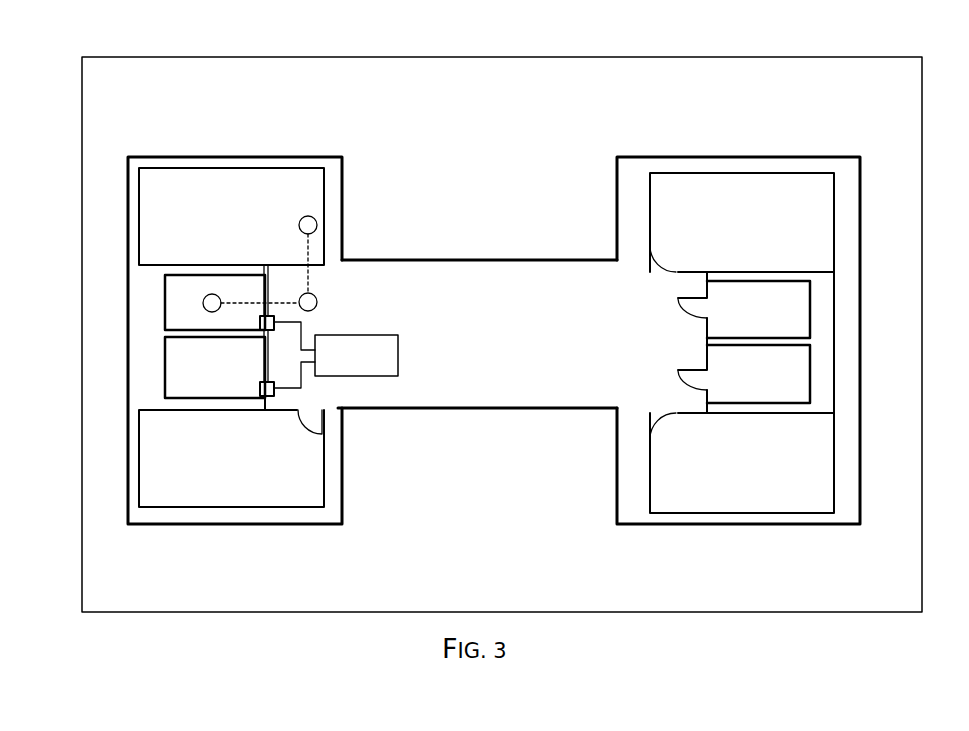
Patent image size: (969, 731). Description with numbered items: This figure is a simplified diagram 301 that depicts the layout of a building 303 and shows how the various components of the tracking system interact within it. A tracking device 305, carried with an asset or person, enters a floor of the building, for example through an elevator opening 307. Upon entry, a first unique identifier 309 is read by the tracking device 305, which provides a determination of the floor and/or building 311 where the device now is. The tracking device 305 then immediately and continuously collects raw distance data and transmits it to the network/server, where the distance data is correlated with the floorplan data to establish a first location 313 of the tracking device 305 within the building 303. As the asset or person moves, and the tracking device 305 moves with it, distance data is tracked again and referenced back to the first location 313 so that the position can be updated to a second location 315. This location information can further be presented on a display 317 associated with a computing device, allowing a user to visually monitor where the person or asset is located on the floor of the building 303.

The simplified diagram 301 is at (123, 53).
The building 303 is at (342, 493).
The tracking device 305 is at (203, 303).
The elevator opening 307 is at (270, 292).
The first unique identifier 309 is at (274, 320).
The floor and/or building 311 is at (398, 357).
The first location 313 is at (317, 300).
The second location 315 is at (317, 222).
The display 317 is at (82, 192).